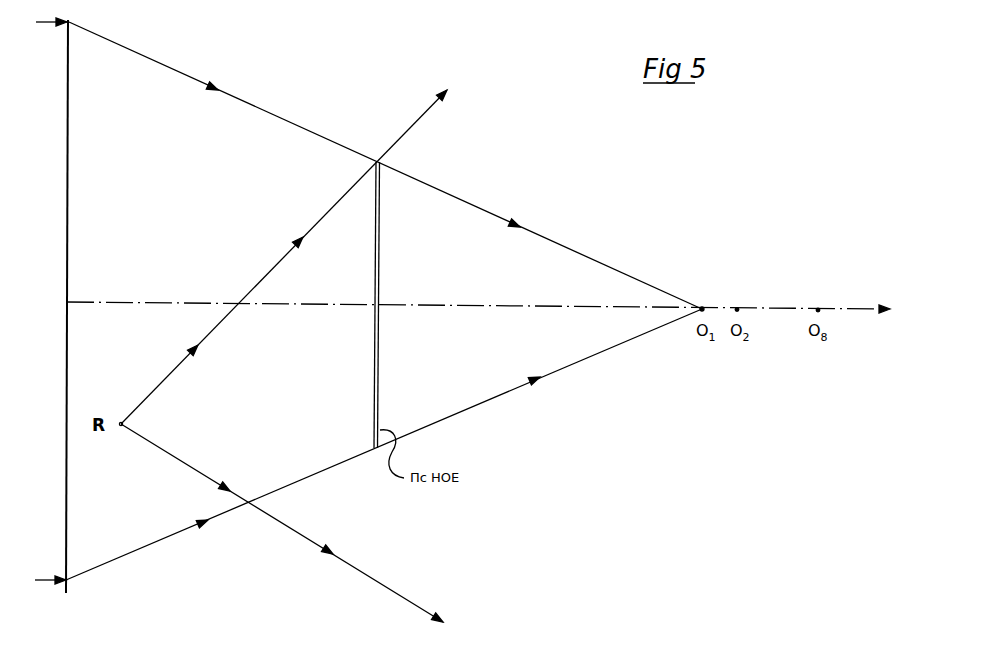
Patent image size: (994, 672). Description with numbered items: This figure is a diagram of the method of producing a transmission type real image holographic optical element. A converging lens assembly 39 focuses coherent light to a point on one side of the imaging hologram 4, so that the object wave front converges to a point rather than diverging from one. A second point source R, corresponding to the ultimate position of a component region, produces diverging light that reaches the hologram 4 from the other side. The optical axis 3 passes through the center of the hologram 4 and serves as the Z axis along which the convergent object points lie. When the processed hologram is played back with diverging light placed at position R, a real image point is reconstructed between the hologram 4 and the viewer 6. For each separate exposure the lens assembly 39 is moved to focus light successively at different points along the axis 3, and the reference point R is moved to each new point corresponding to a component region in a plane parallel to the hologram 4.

The lens assembly 39 is at (68, 225).
The imaging hologram 4 is at (380, 227).
The optical axis 3 is at (507, 306).
The viewer 6 is at (886, 305).